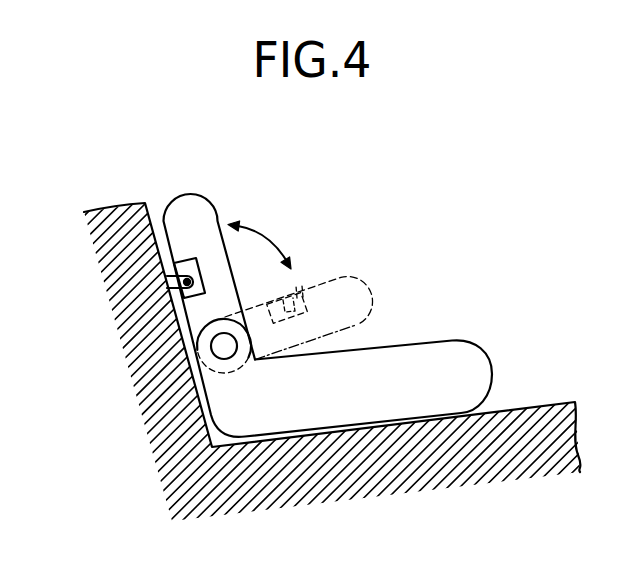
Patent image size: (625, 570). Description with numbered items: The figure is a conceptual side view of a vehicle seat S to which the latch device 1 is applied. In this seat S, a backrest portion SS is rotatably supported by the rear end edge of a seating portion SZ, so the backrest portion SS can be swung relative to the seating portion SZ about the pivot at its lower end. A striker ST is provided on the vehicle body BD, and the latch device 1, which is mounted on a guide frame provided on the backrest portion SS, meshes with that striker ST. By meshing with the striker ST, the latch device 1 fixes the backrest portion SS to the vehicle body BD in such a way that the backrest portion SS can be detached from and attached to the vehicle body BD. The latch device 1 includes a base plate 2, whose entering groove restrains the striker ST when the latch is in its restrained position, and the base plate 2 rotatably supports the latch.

The vehicle body BD is at (110, 212).
The seating portion SZ is at (483, 374).
The backrest portion SS is at (192, 215).
The striker ST is at (185, 295).
The latch device 1 is at (187, 282).
The base plate 2 is at (304, 288).
The vehicle seat S is at (478, 231).